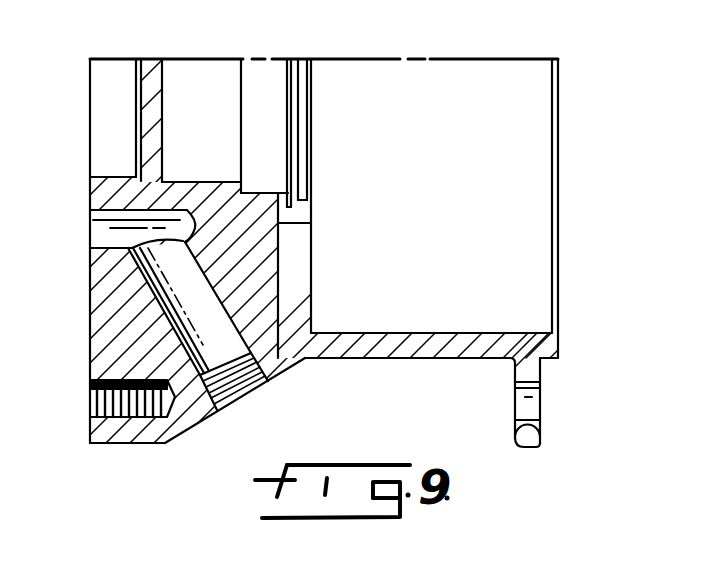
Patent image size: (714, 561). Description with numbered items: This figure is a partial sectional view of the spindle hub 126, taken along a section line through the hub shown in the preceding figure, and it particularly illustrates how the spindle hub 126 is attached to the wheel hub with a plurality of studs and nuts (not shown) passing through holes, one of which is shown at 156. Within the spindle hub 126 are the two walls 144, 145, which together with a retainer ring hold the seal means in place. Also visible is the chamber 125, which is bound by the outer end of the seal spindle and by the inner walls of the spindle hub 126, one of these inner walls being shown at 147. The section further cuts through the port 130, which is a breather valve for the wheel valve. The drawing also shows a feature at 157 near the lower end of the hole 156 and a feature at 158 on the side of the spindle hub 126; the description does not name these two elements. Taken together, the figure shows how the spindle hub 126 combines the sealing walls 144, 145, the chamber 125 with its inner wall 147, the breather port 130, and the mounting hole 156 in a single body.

The chamber 125 is at (203, 67).
The spindle hub 126 is at (146, 444).
The port 130 is at (252, 398).
The wall 144 is at (244, 191).
The wall 145 is at (265, 191).
The inner wall 147 is at (168, 62).
The hole 156 is at (537, 403).
The pin tip 157 is at (530, 448).
The knurled portion 158 is at (90, 403).